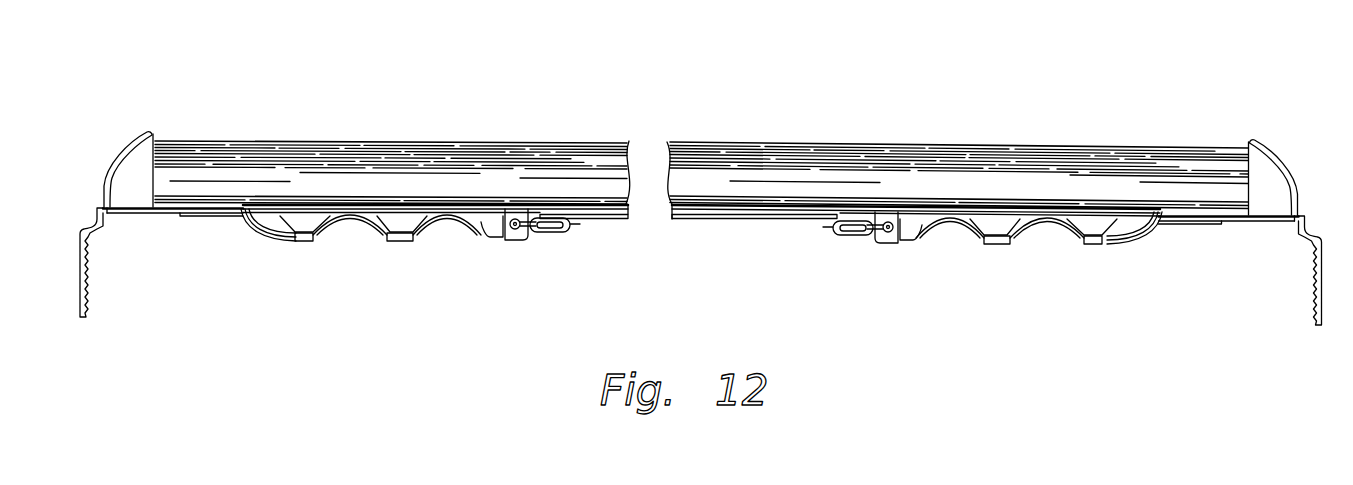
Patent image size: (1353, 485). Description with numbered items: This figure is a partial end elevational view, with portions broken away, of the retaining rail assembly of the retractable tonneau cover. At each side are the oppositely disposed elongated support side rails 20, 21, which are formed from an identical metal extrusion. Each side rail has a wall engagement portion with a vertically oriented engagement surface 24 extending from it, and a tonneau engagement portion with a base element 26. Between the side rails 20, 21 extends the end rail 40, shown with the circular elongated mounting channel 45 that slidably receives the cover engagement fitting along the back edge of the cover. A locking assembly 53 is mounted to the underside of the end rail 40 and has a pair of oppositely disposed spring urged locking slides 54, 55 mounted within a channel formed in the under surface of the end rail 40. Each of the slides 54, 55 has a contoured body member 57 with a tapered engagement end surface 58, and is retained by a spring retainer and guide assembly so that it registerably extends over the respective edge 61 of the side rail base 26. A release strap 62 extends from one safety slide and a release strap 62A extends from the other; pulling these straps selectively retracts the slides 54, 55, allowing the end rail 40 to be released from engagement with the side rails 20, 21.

The support side rail 20 is at (118, 147).
The support side rail 21 is at (1280, 146).
The vertically oriented engagement surface 24 is at (89, 294).
The base element 26 is at (153, 218).
The end rail 40 is at (948, 143).
The circular elongated mounting channel 45 is at (220, 198).
The locking assembly 53 is at (413, 268).
The locking slide 54 is at (356, 228).
The locking slide 55 is at (1040, 235).
The contoured body member 57 is at (440, 218).
The tapered engagement end surface 58 is at (251, 243).
The edge 61 is at (223, 217).
The release strap 62 is at (603, 224).
The release strap 62A is at (695, 222).